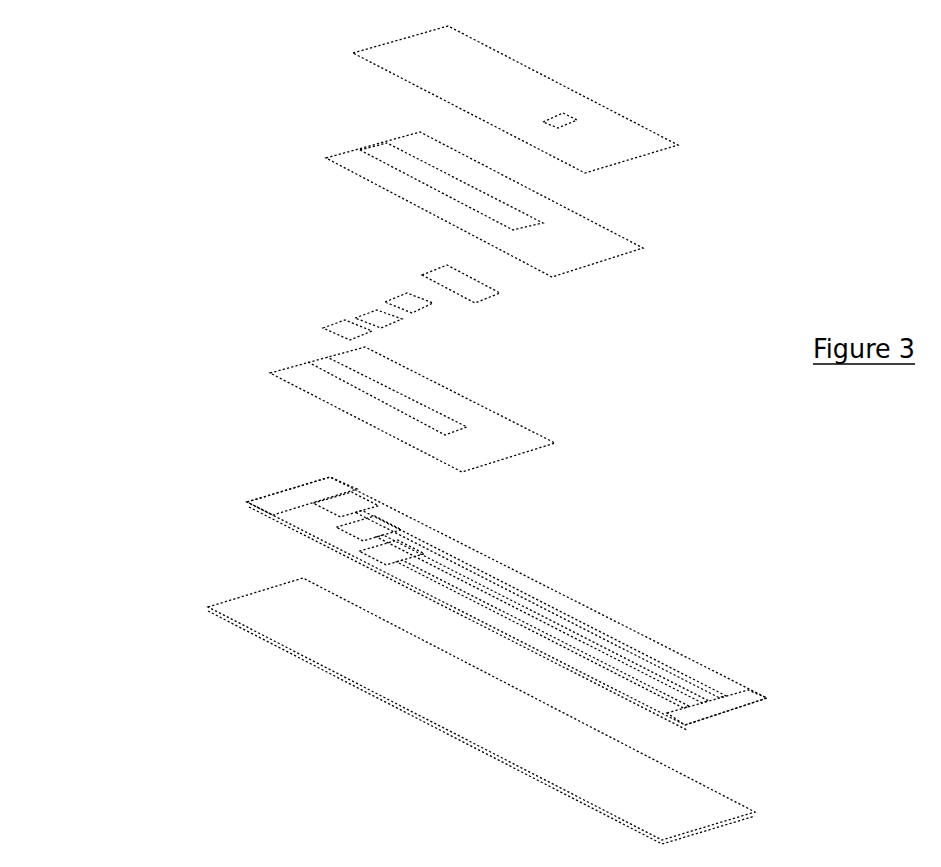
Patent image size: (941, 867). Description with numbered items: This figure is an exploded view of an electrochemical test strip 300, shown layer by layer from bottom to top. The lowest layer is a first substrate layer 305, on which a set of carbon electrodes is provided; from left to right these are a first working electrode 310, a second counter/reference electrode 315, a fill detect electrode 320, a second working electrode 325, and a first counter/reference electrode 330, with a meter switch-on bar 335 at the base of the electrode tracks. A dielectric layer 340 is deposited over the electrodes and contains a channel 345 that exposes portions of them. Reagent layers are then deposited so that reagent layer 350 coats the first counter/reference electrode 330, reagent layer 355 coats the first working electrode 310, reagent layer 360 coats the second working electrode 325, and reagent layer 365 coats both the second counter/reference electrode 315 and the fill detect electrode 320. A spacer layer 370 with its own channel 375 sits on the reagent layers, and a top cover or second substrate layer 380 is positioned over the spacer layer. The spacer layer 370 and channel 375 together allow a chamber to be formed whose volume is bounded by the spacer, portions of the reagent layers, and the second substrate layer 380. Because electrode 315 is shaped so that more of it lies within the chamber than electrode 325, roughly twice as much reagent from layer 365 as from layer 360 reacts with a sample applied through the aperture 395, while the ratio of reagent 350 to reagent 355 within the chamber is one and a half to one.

The test strip 300 is at (130, 660).
The first substrate layer 305 is at (390, 682).
The first working electrode 310 is at (474, 584).
The second counter/reference electrode 315 is at (390, 538).
The fill detect electrode 320 is at (408, 555).
The second working electrode 325 is at (362, 518).
The first counter/reference electrode 330 is at (290, 496).
The meter switch-on bar 335 is at (742, 703).
The dielectric layer 340 is at (396, 409).
The channel 345 is at (423, 413).
The reagent layer 350 is at (347, 332).
The reagent layer 355 is at (385, 313).
The reagent layer 360 is at (415, 305).
The reagent layer 365 is at (477, 293).
The spacer layer 370 is at (465, 213).
The channel 375 is at (423, 177).
The second substrate layer 380 is at (608, 157).
The aperture 395 is at (367, 140).